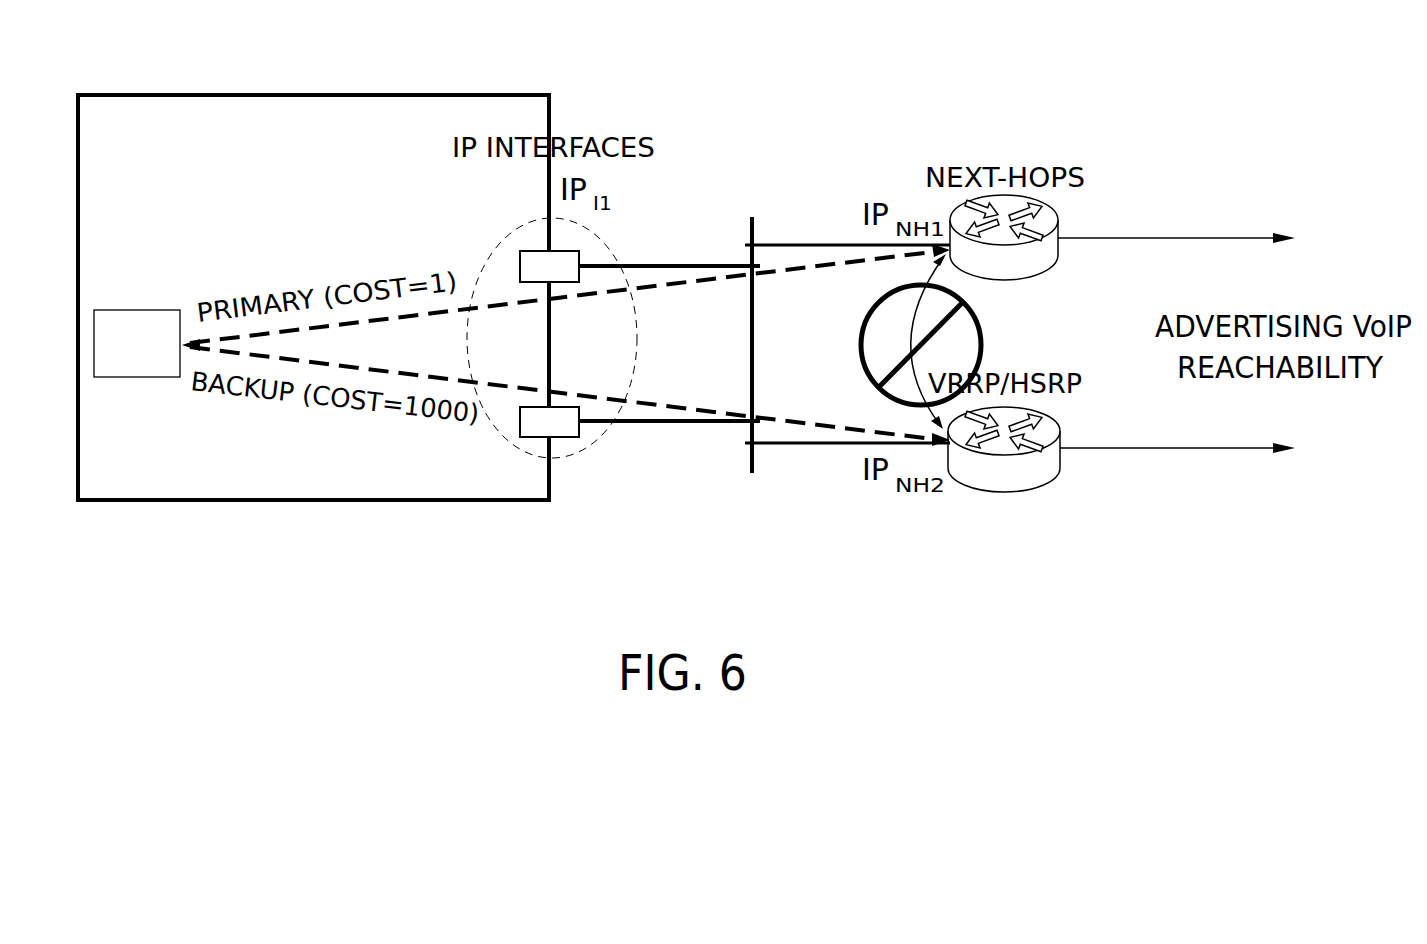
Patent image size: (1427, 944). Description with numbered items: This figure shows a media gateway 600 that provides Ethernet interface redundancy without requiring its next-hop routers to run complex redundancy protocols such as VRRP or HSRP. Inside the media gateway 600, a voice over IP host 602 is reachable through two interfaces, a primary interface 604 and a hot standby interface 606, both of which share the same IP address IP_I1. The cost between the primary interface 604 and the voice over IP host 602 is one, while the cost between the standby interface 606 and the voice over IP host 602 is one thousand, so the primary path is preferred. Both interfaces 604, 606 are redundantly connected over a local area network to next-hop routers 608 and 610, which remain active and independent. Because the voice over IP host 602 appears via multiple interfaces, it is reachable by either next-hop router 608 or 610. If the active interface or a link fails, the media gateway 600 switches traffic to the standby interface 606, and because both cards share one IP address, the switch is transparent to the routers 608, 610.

The media gateway 600 is at (249, 95).
The voice over IP host 602 is at (137, 309).
The primary interface 604 is at (520, 266).
The hot standby interface 606 is at (520, 425).
The next-hop router 608 is at (1060, 218).
The next-hop router 610 is at (1060, 428).